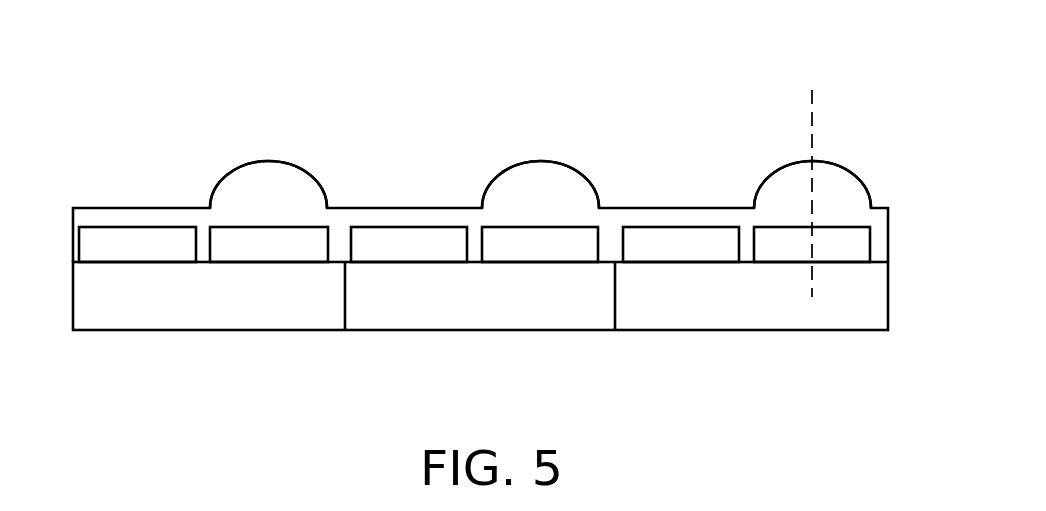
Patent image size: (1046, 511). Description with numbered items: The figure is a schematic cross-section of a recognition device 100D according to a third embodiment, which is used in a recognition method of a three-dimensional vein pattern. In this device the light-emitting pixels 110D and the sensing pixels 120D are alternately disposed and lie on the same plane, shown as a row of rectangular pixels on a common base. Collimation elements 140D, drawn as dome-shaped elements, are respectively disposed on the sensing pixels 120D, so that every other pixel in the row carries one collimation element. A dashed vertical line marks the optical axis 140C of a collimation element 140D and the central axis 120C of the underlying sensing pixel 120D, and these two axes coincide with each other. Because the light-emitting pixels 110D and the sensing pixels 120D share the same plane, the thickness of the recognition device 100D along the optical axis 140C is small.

The recognition device 100D is at (930, 422).
The light-emitting pixels 110D is at (682, 250).
The sensing pixels 120D is at (788, 250).
The collimation elements 140D is at (787, 185).
The optical axis 140C is at (812, 95).
The central axis 120C is at (812, 95).